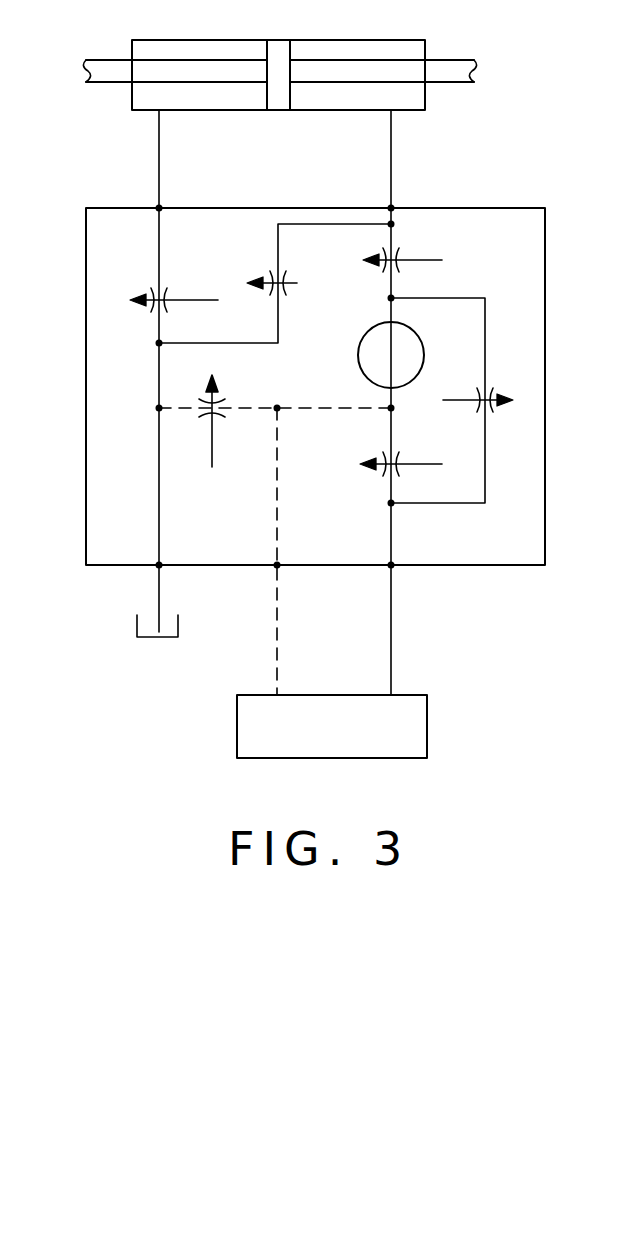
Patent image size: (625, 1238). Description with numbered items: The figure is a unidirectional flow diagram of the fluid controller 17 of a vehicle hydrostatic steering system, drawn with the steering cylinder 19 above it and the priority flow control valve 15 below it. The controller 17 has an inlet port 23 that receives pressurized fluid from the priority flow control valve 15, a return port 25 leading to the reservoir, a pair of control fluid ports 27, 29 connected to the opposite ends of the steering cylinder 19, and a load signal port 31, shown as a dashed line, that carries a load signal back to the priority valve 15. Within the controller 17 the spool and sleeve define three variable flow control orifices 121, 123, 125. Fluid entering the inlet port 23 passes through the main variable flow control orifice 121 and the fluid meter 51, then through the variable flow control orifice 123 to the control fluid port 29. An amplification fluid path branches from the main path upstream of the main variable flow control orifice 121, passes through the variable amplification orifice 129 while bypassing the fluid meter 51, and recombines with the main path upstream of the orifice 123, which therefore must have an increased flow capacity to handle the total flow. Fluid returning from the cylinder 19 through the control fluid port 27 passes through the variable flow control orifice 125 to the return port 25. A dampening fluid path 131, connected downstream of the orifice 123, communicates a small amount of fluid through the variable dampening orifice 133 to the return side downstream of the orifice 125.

The priority flow control valve 15 is at (432, 731).
The fluid controller 17 is at (78, 222).
The steering cylinder 19 is at (218, 40).
The inlet port 23 is at (391, 565).
The return port 25 is at (159, 565).
The control fluid port 27 is at (159, 208).
The control fluid port 29 is at (391, 208).
The load signal port 31 is at (277, 565).
The fluid meter 51 is at (362, 338).
The main variable flow control orifice 121 is at (378, 454).
The variable flow control orifice 123 is at (378, 256).
The variable flow control orifice 125 is at (164, 290).
The variable amplification orifice 129 is at (500, 392).
The dampening fluid path 131 is at (297, 224).
The variable dampening orifice 133 is at (266, 276).